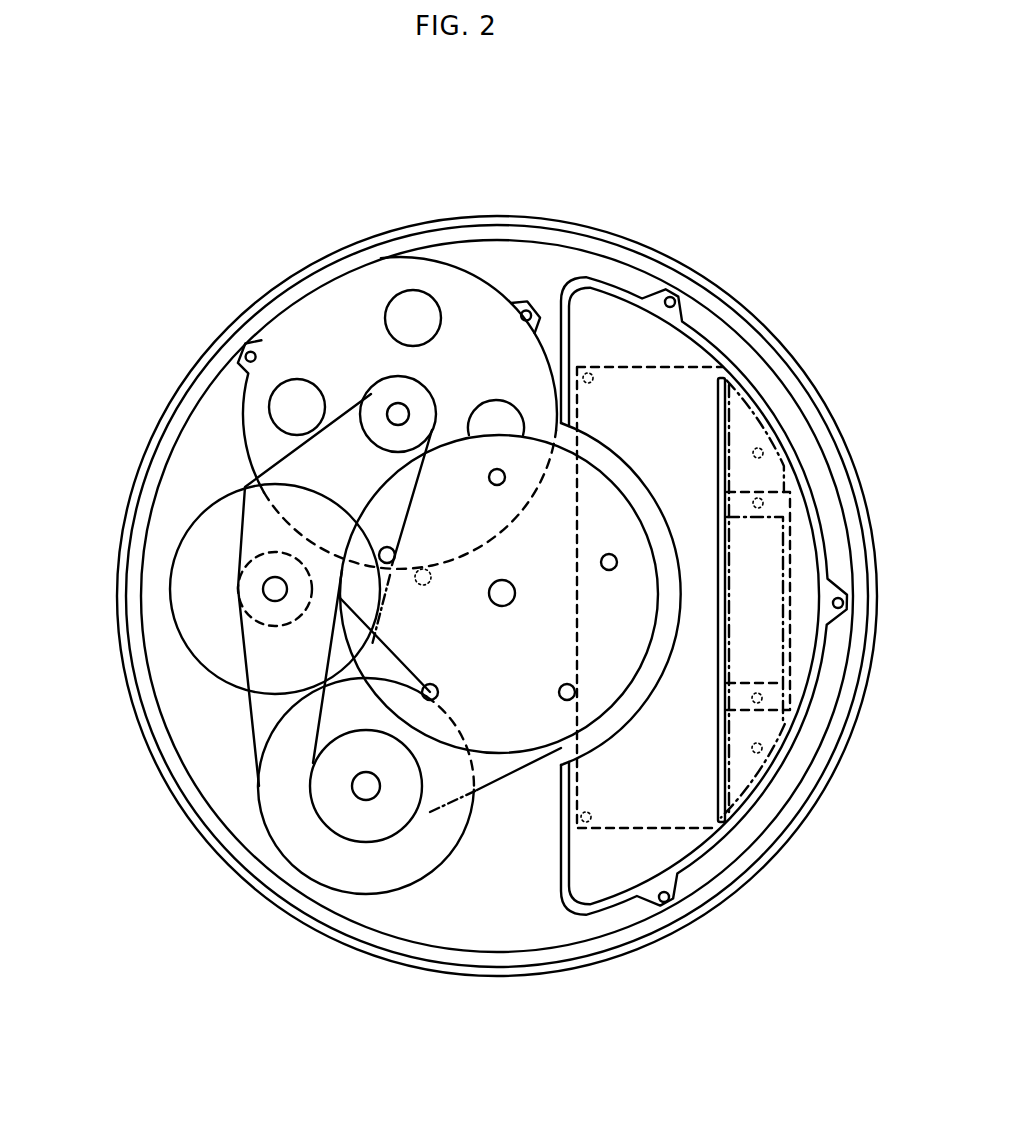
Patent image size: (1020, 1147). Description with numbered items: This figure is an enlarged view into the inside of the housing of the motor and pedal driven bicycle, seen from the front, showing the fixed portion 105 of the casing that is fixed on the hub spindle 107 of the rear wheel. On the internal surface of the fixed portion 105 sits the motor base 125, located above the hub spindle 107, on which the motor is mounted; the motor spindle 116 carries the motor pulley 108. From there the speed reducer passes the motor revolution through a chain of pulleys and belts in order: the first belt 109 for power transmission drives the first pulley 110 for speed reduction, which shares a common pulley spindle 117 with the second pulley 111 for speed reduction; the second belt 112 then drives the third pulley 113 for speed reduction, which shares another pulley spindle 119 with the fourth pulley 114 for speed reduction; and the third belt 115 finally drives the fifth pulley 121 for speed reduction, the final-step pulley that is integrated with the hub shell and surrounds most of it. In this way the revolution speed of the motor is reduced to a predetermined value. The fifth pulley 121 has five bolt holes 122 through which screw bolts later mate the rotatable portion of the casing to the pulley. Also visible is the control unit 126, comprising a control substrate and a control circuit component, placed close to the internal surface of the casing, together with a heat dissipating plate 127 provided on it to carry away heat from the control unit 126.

The fixed portion of the casing 105 is at (805, 820).
The hub spindle 107 is at (513, 583).
The motor pulley 108 is at (390, 402).
The first belt 109 is at (327, 425).
The first pulley for speed reduction 110 is at (185, 585).
The second pulley for speed reduction 111 is at (287, 625).
The second belt 112 is at (254, 745).
The third pulley for speed reduction 113 is at (297, 843).
The fourth pulley for speed reduction 114 is at (355, 823).
The third belt 115 is at (516, 783).
The motor spindle 116 is at (403, 412).
The pulley spindle 117 is at (265, 580).
The pulley spindle 119 is at (352, 787).
The fifth pulley for speed reduction 121 is at (473, 663).
The bolt holes 122 is at (492, 484).
The motor base 125 is at (308, 310).
The control unit 126 is at (677, 826).
The heat dissipating plate 127 is at (716, 512).